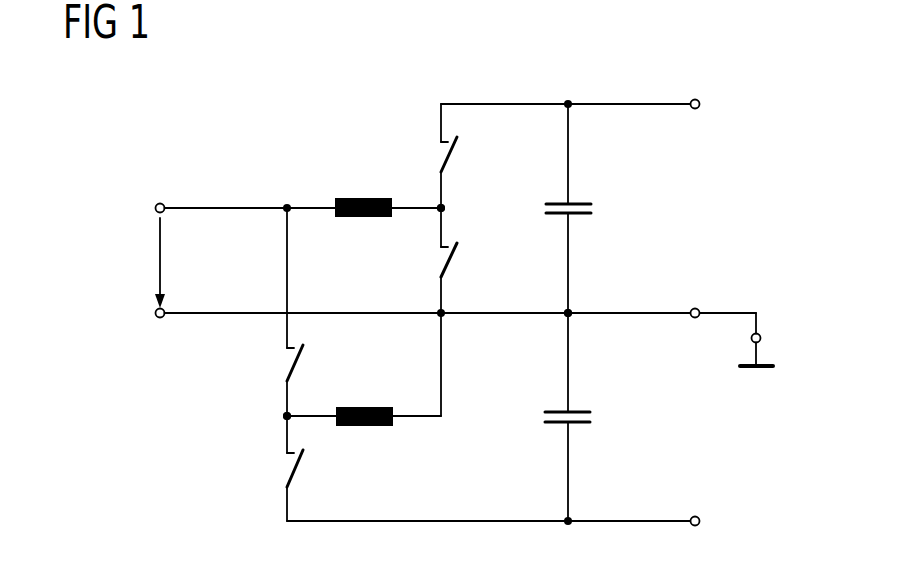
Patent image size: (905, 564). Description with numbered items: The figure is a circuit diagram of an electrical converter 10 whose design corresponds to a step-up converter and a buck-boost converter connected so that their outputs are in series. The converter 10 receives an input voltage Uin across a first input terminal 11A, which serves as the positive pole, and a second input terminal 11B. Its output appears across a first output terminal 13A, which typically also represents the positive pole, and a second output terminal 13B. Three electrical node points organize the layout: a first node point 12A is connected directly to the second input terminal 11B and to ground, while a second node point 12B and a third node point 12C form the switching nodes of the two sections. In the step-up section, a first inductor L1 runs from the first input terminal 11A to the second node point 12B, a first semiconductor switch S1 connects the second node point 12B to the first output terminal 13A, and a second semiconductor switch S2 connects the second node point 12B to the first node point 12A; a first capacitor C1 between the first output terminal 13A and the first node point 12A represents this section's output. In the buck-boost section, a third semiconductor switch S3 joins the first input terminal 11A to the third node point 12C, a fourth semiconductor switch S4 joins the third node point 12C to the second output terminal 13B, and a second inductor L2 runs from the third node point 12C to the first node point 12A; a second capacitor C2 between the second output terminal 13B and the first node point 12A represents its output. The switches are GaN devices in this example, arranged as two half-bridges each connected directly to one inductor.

The electrical converter 10 is at (305, 97).
The first input terminal 11A is at (153, 208).
The second input terminal 11B is at (153, 313).
The input voltage Uin is at (155, 257).
The first node point 12A is at (571, 311).
The second node point 12B is at (448, 210).
The third node point 12C is at (284, 416).
The first output terminal 13A is at (701, 105).
The second output terminal 13B is at (701, 522).
The first inductor L1 is at (364, 198).
The second inductor L2 is at (365, 407).
The first semiconductor switch S1 is at (449, 158).
The second semiconductor switch S2 is at (449, 263).
The third semiconductor switch S3 is at (290, 364).
The fourth semiconductor switch S4 is at (290, 467).
The first capacitor C1 is at (580, 203).
The second capacitor C2 is at (582, 411).